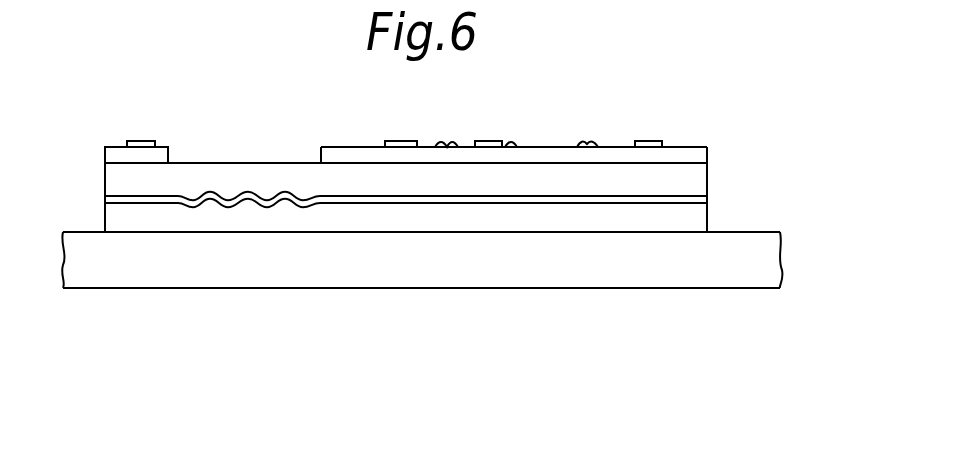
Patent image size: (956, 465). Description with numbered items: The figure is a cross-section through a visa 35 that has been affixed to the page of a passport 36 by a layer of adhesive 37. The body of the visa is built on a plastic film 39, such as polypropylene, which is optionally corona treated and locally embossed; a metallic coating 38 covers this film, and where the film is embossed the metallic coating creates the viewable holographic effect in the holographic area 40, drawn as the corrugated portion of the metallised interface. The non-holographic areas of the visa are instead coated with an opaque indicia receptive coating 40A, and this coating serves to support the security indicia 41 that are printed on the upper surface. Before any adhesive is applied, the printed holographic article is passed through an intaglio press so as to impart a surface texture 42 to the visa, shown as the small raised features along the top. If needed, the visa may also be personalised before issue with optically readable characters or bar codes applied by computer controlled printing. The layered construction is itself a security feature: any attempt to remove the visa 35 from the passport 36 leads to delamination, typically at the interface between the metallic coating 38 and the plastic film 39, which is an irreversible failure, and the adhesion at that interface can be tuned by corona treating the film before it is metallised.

The visa 35 is at (722, 165).
The passport 36 is at (763, 247).
The adhesive 37 is at (690, 220).
The metallic coating 38 is at (128, 197).
The plastic film 39 is at (548, 185).
The holographic area 40 is at (225, 182).
The opaque indicia receptive coating 40A is at (123, 155).
The security indicia 41 is at (150, 139).
The surface texture 42 is at (458, 143).